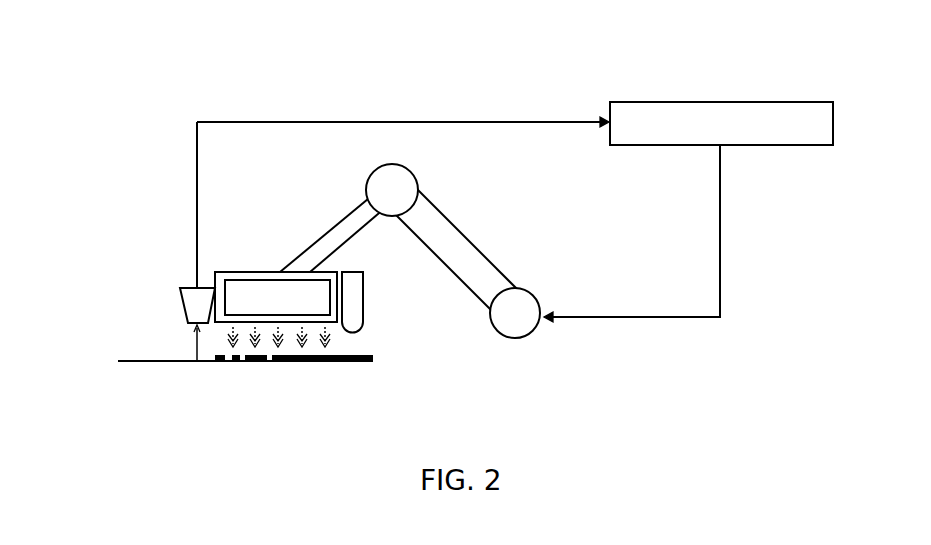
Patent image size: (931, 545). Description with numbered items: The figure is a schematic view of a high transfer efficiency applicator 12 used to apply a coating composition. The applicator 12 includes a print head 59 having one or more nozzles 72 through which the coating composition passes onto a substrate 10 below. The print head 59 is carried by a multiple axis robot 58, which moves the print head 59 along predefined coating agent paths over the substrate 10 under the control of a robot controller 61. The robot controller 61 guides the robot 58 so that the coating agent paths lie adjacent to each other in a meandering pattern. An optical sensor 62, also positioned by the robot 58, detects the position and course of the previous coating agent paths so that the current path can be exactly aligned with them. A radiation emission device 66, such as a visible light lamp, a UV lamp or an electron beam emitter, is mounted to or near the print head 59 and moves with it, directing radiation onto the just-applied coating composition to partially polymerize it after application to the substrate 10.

The substrate 10 is at (170, 361).
The high transfer efficiency applicator 12 is at (165, 426).
The multiple axis robot 58 is at (460, 245).
The print head 59 is at (263, 272).
The robot controller 61 is at (687, 102).
The optical sensor 62 is at (183, 305).
The radiation emission device 66 is at (353, 303).
The nozzles 72 is at (330, 330).